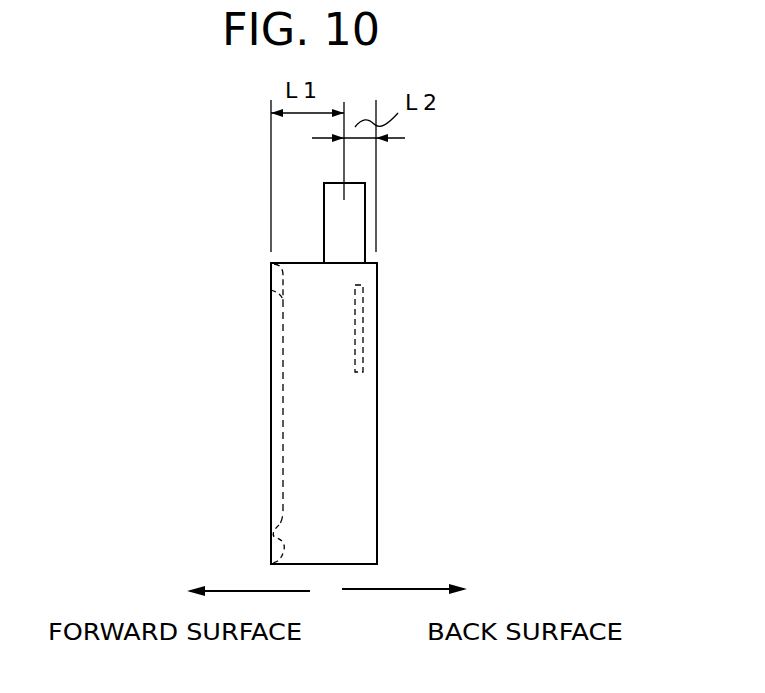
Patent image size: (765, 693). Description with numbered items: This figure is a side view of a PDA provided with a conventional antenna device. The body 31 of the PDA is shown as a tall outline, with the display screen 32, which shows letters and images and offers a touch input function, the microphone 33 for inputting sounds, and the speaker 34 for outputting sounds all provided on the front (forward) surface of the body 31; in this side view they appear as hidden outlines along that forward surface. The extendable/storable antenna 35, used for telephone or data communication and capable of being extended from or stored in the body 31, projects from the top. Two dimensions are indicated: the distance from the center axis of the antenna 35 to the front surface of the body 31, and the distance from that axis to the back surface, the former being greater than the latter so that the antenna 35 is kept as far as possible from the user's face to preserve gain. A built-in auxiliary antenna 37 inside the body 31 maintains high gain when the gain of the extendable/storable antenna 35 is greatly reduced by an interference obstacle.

The body 31 is at (366, 465).
The display screen 32 is at (271, 395).
The microphone 33 is at (271, 556).
The speaker 34 is at (271, 286).
The extendable/storable antenna 35 is at (365, 222).
The built-in auxiliary antenna 37 is at (363, 324).